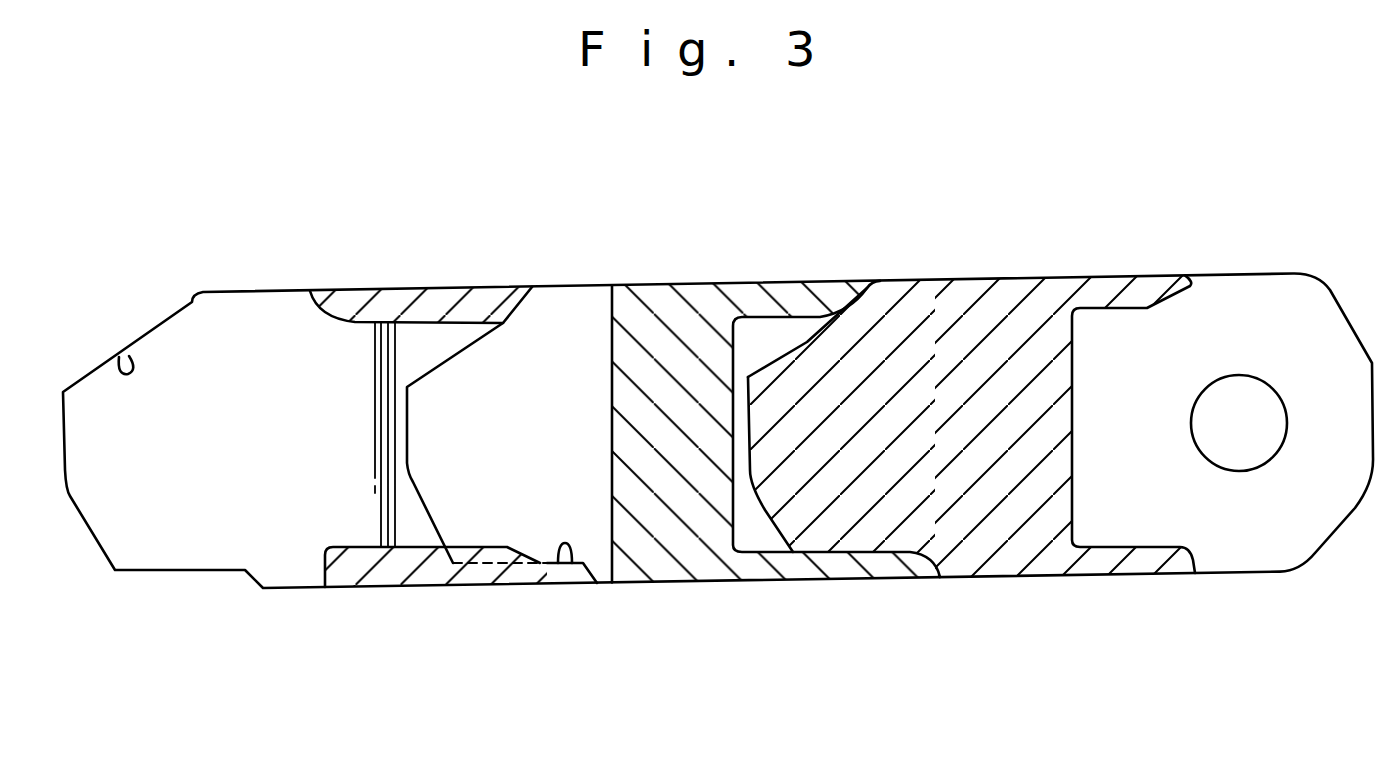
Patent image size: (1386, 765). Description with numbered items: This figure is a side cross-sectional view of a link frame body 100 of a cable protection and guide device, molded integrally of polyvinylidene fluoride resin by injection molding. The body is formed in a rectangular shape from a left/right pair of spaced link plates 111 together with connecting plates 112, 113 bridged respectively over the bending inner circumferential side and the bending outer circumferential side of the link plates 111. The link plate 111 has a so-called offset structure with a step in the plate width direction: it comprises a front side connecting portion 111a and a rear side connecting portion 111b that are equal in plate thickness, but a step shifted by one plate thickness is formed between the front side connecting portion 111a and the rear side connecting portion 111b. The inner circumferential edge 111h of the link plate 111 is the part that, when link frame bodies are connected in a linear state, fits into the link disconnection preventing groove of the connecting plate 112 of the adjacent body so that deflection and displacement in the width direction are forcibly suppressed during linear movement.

The shoe (brake shoe) assembly 100 is at (970, 245).
The link plate 111 is at (123, 370).
The front side connecting portion 111a is at (1247, 522).
The rear side connecting portion 111b is at (990, 497).
The inner circumferential edge 111h is at (570, 553).
The connecting plate 112 is at (397, 573).
The connecting plate 113 is at (433, 290).